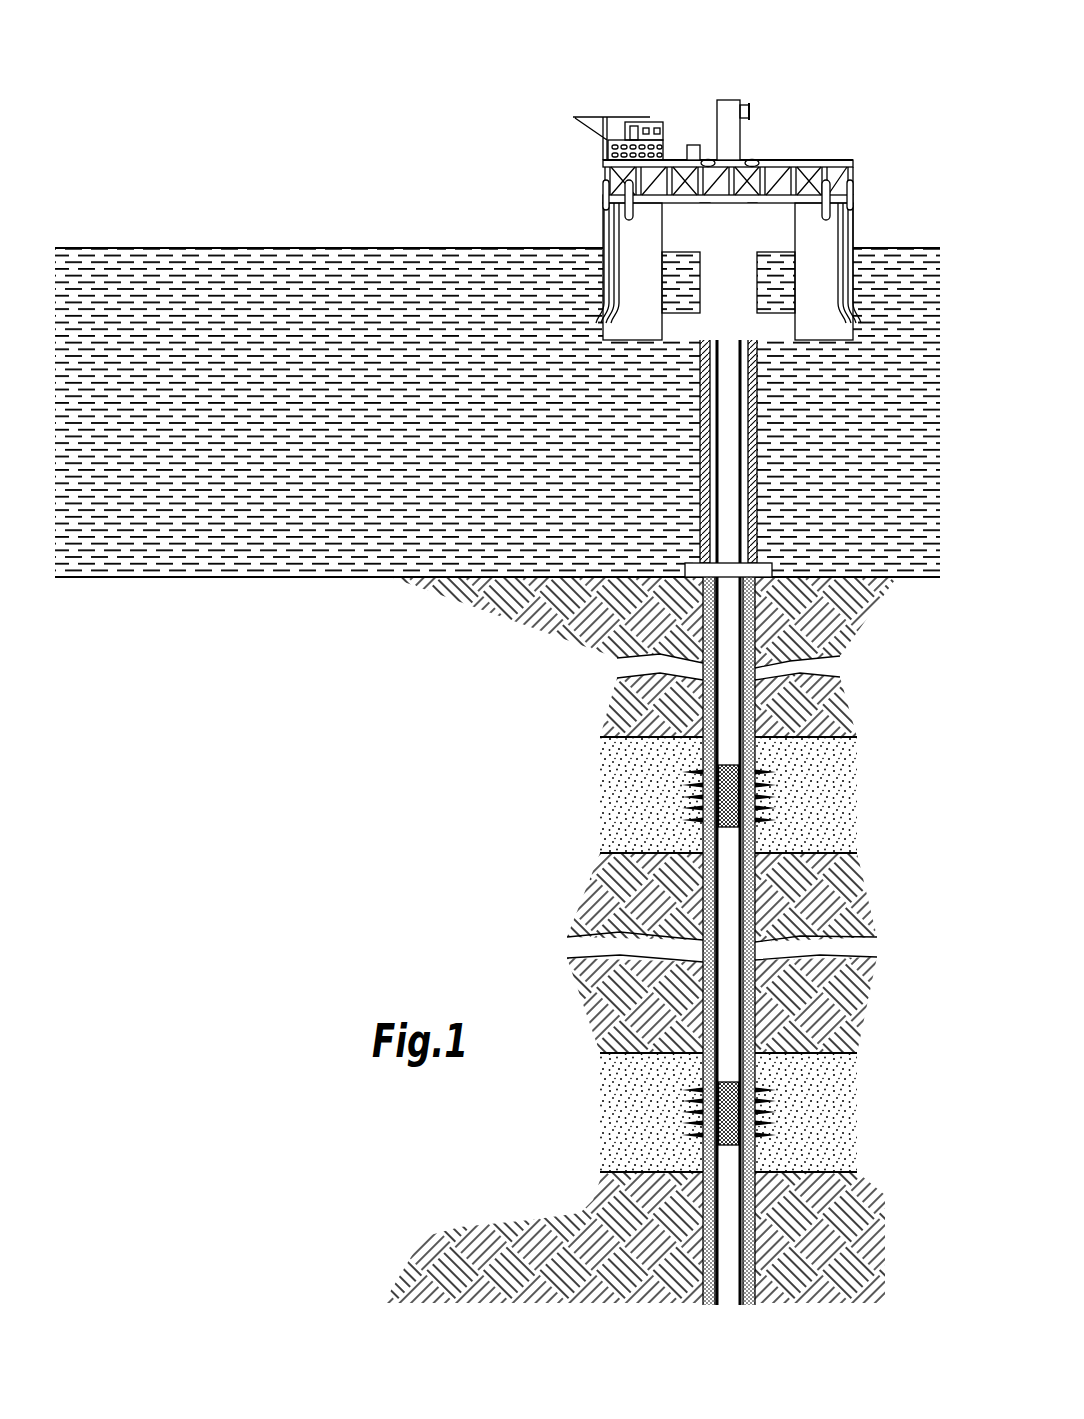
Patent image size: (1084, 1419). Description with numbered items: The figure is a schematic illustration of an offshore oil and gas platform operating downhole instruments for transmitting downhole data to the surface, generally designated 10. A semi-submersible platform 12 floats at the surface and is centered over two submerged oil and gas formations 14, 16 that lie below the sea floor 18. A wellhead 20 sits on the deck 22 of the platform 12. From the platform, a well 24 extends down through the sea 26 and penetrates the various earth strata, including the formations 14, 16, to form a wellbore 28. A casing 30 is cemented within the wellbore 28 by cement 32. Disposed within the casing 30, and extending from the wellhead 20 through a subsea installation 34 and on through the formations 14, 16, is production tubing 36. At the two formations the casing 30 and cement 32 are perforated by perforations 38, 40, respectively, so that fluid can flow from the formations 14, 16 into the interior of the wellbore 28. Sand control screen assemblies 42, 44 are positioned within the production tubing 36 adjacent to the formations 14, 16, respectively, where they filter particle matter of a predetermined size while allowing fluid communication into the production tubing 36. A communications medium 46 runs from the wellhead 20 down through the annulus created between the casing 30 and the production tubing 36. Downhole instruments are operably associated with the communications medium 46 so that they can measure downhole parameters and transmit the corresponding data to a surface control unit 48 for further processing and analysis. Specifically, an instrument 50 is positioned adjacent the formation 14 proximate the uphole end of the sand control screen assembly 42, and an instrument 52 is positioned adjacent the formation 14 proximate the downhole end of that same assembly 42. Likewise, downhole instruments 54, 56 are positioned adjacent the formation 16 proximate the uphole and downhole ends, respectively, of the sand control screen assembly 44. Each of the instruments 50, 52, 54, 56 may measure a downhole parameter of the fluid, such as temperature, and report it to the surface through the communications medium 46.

The offshore oil and gas platform operating downhole instruments 10 is at (655, 38).
The semi-submersible platform 12 is at (853, 161).
The oil and gas formation 14 is at (837, 802).
The oil and gas formation 16 is at (837, 1118).
The sea floor 18 is at (270, 579).
The wellhead 20 is at (730, 100).
The deck 22 is at (798, 159).
The well 24 is at (757, 410).
The sea 26 is at (365, 428).
The wellbore 28 is at (703, 708).
The casing 30 is at (757, 602).
The cement 32 is at (757, 648).
The subsea installation 34 is at (772, 565).
The production tubing 36 is at (757, 705).
The perforations 38 is at (757, 775).
The perforations 40 is at (757, 1090).
The sand control screen assembly 42 is at (757, 853).
The sand control screen assembly 44 is at (745, 1150).
The communications medium 46 is at (703, 634).
The surface control unit 48 is at (699, 145).
The instrument 50 is at (703, 748).
The instrument 52 is at (703, 841).
The downhole instrument 54 is at (703, 1065).
The downhole instrument 56 is at (703, 1157).